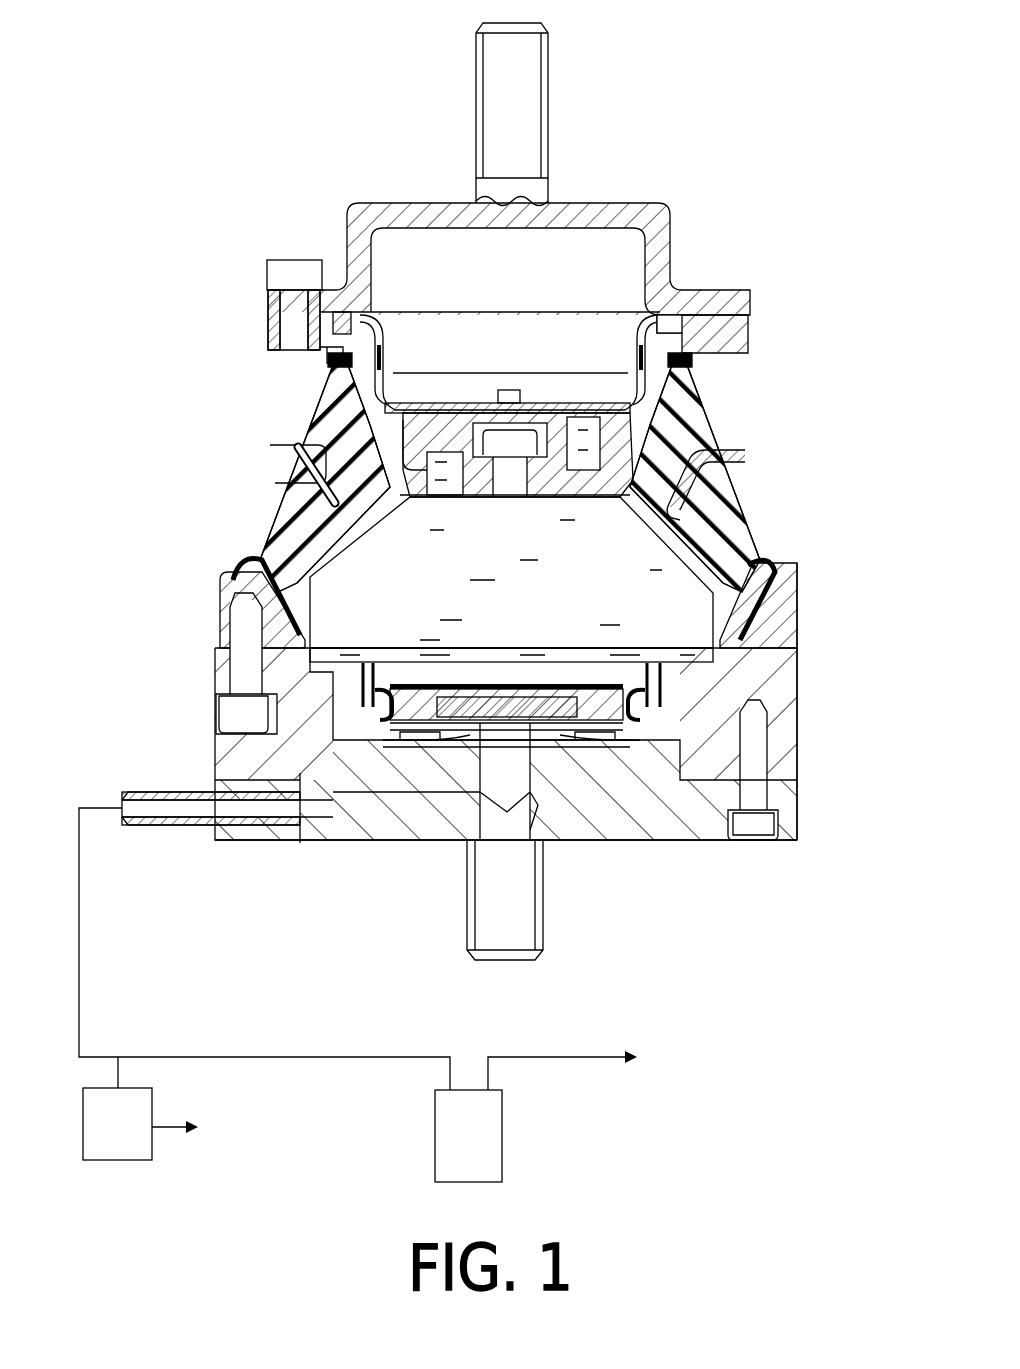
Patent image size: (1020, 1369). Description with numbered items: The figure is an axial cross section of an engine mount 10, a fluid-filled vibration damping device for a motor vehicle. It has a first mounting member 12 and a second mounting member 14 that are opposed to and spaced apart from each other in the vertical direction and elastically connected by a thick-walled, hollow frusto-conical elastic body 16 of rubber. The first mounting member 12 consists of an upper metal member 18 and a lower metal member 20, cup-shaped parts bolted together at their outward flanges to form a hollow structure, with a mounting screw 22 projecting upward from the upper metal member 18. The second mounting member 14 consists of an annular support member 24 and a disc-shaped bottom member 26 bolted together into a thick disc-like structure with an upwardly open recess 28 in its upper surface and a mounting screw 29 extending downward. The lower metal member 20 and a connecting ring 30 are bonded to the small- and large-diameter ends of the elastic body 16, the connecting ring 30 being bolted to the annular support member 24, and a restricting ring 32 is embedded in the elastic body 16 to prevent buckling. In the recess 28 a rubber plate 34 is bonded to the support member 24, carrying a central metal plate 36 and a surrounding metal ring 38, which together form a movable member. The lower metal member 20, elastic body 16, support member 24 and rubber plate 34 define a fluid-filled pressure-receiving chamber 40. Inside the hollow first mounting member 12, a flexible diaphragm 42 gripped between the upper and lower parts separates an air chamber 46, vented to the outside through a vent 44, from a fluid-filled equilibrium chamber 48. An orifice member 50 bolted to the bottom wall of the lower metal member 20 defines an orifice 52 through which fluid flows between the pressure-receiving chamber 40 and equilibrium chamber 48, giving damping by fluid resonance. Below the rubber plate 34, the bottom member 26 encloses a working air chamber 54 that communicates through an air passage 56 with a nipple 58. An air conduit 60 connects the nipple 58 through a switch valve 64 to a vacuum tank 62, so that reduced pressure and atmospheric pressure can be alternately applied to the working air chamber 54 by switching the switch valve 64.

The engine mount 10 is at (662, 46).
The first mounting member 12 is at (363, 192).
The second mounting member 14 is at (812, 737).
The elastic body 16 is at (730, 547).
The upper metal member 18 is at (623, 212).
The lower metal member 20 is at (660, 398).
The mounting screw 22 is at (490, 75).
The annular support member 24 is at (790, 687).
The bottom member 26 is at (670, 830).
The recess 28 is at (593, 747).
The mounting screw 29 is at (513, 930).
The connecting ring 30 is at (790, 593).
The restricting ring 32 is at (320, 478).
The rubber plate 34 is at (410, 703).
The metal plate 36 is at (483, 703).
The metal ring 38 is at (373, 715).
The pressure-receiving chamber 40 is at (362, 577).
The flexible diaphragm 42 is at (343, 357).
The vent 44 is at (347, 257).
The air chamber 46 is at (630, 262).
The equilibrium chamber 48 is at (406, 414).
The orifice member 50 is at (442, 422).
The orifice 52 is at (430, 456).
The working air chamber 54 is at (547, 737).
The air passage 56 is at (323, 817).
The nipple 58 is at (195, 793).
The air conduit 60 is at (108, 1004).
The vacuum tank 62 is at (490, 1137).
The switch valve 64 is at (118, 1152).